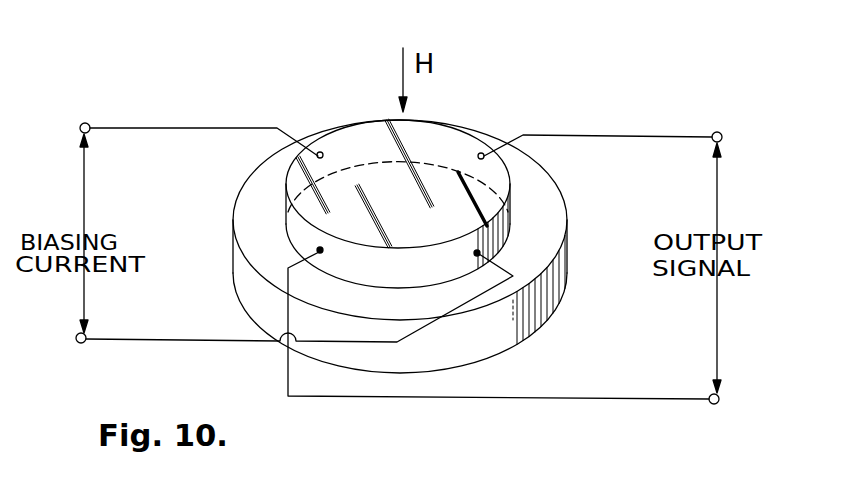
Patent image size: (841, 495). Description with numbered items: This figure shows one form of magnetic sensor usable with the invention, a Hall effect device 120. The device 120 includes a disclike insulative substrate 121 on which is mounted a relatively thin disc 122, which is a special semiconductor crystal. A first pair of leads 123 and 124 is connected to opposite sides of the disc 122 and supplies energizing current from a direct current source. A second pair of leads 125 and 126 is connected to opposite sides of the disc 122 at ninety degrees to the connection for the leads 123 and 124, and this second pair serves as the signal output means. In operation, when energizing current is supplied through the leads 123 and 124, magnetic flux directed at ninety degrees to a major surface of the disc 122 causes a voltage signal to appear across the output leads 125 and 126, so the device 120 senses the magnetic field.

The Hall effect device 120 is at (426, 213).
The disclike insulative substrate 121 is at (513, 318).
The thin disc 122 is at (375, 132).
The lead 123 is at (233, 128).
The lead 124 is at (230, 340).
The lead 125 is at (600, 145).
The lead 126 is at (600, 398).